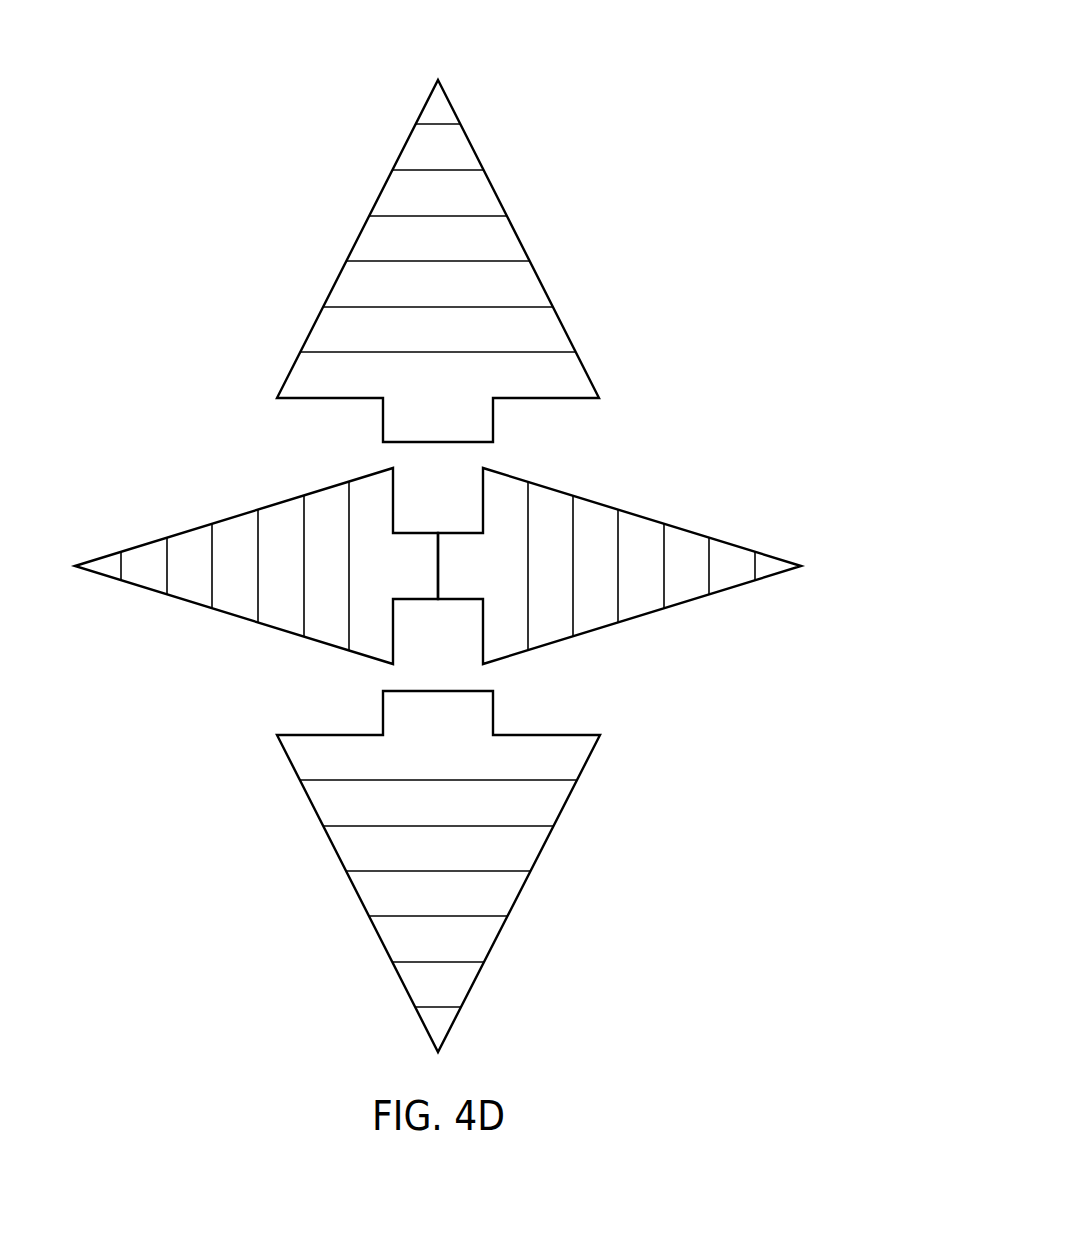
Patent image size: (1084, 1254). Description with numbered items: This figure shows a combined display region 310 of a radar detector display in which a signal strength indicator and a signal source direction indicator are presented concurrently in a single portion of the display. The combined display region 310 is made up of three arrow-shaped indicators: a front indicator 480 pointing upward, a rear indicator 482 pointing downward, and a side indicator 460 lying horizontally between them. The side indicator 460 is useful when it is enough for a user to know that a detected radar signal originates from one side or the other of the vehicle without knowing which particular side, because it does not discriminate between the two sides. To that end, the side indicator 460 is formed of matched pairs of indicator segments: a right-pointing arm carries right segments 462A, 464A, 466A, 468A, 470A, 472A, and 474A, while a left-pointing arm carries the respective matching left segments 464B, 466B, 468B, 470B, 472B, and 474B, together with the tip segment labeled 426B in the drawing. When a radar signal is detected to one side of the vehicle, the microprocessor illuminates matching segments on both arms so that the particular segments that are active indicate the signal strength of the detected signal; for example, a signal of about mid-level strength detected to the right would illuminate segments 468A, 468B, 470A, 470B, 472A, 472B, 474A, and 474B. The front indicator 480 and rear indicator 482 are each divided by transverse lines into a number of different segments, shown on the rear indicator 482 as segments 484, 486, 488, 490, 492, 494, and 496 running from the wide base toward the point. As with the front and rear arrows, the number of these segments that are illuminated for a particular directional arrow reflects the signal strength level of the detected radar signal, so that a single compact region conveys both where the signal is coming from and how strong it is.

The combined display region 310 is at (712, 85).
The front indicator 480 is at (510, 170).
The side indicator 460 is at (697, 495).
The rear indicator 482 is at (377, 988).
The tip of left tapered arm 426B is at (97, 573).
The left segment 464B is at (148, 542).
The left segment 466B is at (187, 602).
The left segment 468B is at (227, 518).
The left segment 470B is at (277, 628).
The left segment 472B is at (323, 645).
The left segment 474B is at (367, 663).
The right segment 462A is at (778, 573).
The right segment 464A is at (752, 527).
The right segment 466A is at (690, 603).
The right segment 468A is at (638, 515).
The right segment 470A is at (598, 628).
The right segment 472A is at (552, 643).
The right segment 474A is at (507, 658).
The segment 484 is at (590, 762).
The segment 486 is at (568, 808).
The segment 488 is at (543, 853).
The segment 490 is at (523, 897).
The segment 492 is at (498, 942).
The segment 494 is at (475, 988).
The segment 496 is at (450, 1032).